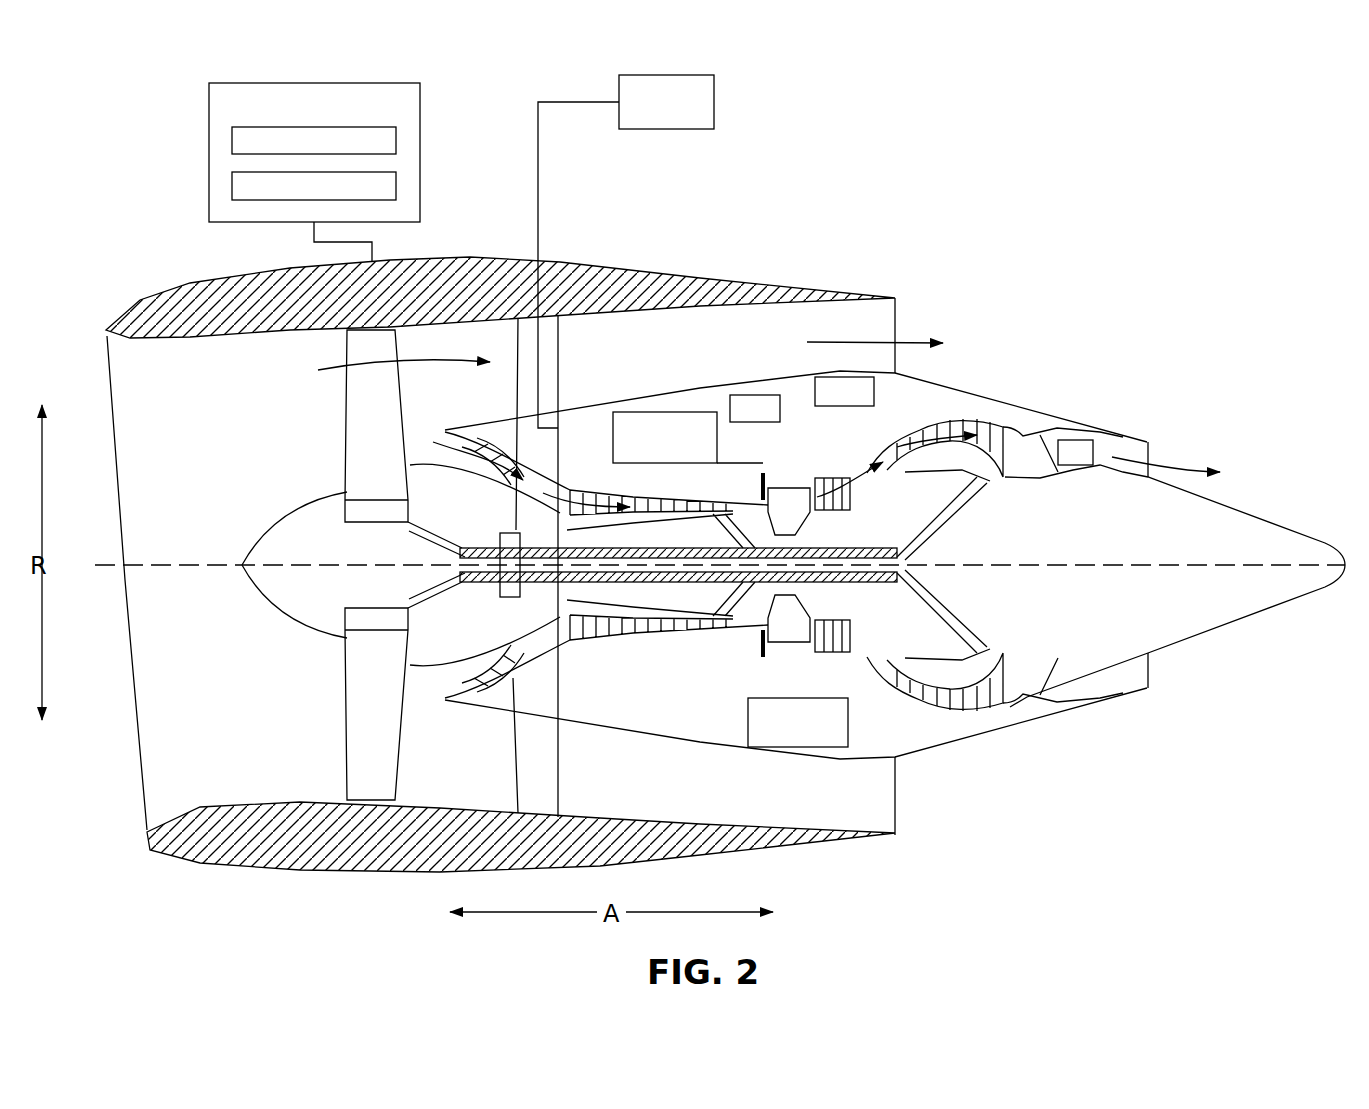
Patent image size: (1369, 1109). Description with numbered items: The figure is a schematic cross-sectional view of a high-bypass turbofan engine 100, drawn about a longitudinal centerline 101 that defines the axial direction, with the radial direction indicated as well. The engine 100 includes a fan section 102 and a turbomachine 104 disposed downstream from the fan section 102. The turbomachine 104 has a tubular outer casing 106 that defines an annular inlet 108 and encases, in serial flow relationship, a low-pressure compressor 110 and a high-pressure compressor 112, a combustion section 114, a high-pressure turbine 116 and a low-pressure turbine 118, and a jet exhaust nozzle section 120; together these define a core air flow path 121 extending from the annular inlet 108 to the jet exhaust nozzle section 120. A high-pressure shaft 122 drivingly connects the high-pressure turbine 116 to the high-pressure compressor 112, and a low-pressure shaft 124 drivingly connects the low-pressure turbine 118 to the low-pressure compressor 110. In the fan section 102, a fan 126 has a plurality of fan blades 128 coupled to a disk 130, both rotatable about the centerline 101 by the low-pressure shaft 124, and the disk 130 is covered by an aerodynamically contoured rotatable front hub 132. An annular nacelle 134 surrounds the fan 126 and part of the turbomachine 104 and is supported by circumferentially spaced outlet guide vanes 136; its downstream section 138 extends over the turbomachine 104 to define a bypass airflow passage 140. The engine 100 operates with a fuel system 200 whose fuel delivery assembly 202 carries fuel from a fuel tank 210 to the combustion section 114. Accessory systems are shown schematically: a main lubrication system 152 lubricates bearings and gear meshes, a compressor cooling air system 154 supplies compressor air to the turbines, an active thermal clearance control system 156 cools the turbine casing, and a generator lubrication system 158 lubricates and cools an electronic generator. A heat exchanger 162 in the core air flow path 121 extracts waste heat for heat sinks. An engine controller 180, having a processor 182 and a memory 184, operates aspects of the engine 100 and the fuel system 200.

The turbofan engine 100 is at (1050, 275).
The longitudinal centerline 101 is at (1105, 560).
The fan section 102 is at (290, 362).
The turbomachine 104 is at (667, 363).
The outer casing 106 is at (733, 752).
The annular inlet 108 is at (462, 683).
The low-pressure compressor 110 is at (490, 700).
The high-pressure compressor 112 is at (587, 637).
The combustion section 114 is at (778, 640).
The high-pressure turbine 116 is at (855, 647).
The low-pressure turbine 118 is at (978, 690).
The jet exhaust nozzle section 120 is at (1050, 685).
The core air flow path 121 is at (525, 650).
The high-pressure shaft 122 is at (768, 533).
The low-pressure shaft 124 is at (870, 548).
The fan 126 is at (290, 430).
The fan blades 128 is at (340, 735).
The disk 130 is at (355, 512).
The front hub 132 is at (250, 580).
The nacelle 134 is at (395, 890).
The outlet guide vanes 136 is at (560, 337).
The downstream section 138 is at (808, 285).
The bypass airflow passage 140 is at (748, 341).
The main lubrication system 152 is at (667, 413).
The compressor cooling air system 154 is at (753, 397).
The active thermal clearance control system 156 is at (845, 375).
The generator lubrication system 158 is at (800, 750).
The heat exchanger 162 is at (1077, 437).
The engine controller 180 is at (422, 145).
The processor 182 is at (232, 140).
The memory 184 is at (232, 185).
The fuel system 200 is at (127, 100).
The fuel delivery assembly 202 is at (538, 207).
The fuel tank 210 is at (714, 100).